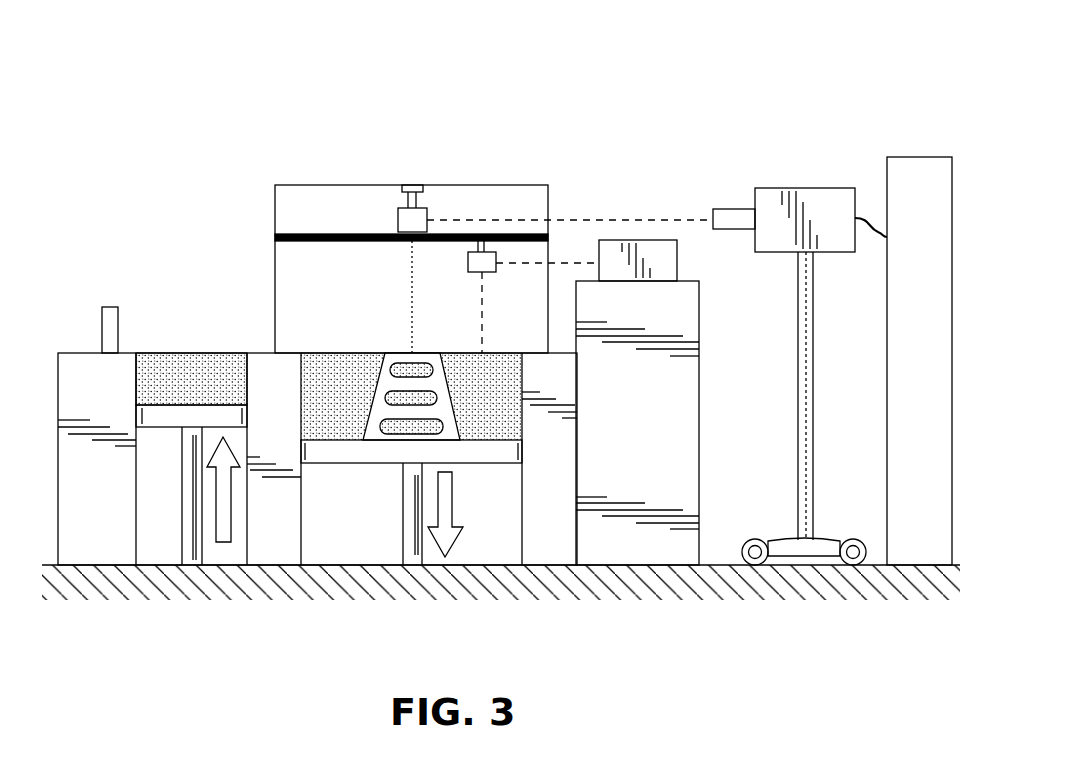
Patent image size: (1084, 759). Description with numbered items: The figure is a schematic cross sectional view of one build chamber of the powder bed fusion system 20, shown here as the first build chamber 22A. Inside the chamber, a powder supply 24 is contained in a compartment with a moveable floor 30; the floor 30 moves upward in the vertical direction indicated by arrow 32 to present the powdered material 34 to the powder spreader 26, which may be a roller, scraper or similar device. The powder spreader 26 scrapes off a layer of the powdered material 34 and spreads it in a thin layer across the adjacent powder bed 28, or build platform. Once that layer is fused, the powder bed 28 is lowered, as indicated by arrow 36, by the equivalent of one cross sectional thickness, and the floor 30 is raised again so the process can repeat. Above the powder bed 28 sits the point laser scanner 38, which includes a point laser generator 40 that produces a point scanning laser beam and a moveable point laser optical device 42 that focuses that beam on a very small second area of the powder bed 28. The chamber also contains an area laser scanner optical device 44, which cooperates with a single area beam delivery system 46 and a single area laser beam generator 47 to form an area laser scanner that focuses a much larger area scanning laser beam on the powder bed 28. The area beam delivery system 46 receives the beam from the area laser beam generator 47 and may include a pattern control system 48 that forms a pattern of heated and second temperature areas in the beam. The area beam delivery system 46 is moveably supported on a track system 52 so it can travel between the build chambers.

The powder bed fusion system 20 is at (645, 94).
The first build chamber 22A is at (225, 263).
The powder supply 24 is at (156, 353).
The powder spreader 26 is at (106, 320).
The powder bed 28 is at (497, 456).
The floor 30 is at (162, 423).
The arrow 32 is at (226, 498).
The powdered material 34 is at (178, 376).
The arrow 36 is at (448, 513).
The point laser scanner 38 is at (565, 258).
The point laser generator 40 is at (667, 260).
The point laser optical device 42 is at (491, 266).
The area laser scanner optical device 44 is at (402, 220).
The area beam delivery system 46 is at (768, 200).
The area laser beam generator 47 is at (915, 160).
The pattern control system 48 is at (731, 210).
The track system 52 is at (853, 539).